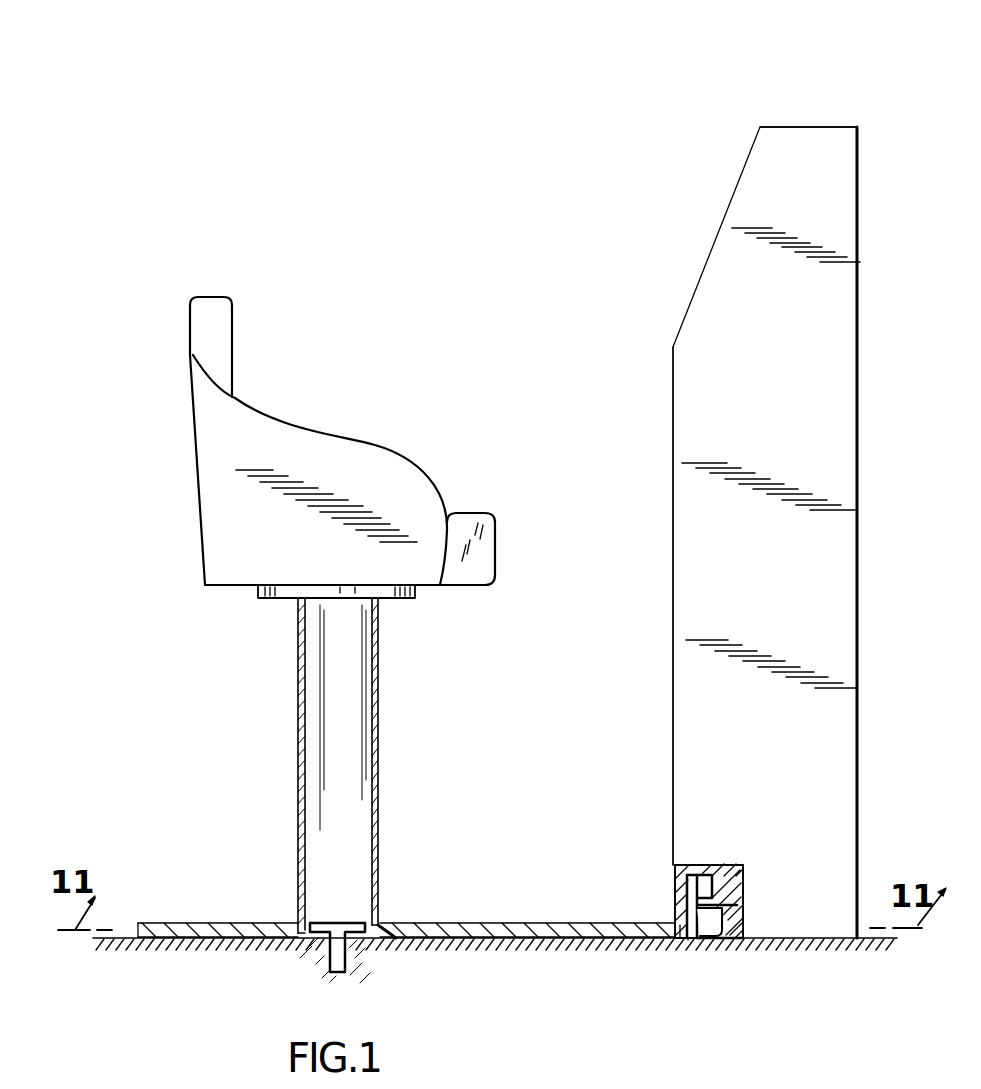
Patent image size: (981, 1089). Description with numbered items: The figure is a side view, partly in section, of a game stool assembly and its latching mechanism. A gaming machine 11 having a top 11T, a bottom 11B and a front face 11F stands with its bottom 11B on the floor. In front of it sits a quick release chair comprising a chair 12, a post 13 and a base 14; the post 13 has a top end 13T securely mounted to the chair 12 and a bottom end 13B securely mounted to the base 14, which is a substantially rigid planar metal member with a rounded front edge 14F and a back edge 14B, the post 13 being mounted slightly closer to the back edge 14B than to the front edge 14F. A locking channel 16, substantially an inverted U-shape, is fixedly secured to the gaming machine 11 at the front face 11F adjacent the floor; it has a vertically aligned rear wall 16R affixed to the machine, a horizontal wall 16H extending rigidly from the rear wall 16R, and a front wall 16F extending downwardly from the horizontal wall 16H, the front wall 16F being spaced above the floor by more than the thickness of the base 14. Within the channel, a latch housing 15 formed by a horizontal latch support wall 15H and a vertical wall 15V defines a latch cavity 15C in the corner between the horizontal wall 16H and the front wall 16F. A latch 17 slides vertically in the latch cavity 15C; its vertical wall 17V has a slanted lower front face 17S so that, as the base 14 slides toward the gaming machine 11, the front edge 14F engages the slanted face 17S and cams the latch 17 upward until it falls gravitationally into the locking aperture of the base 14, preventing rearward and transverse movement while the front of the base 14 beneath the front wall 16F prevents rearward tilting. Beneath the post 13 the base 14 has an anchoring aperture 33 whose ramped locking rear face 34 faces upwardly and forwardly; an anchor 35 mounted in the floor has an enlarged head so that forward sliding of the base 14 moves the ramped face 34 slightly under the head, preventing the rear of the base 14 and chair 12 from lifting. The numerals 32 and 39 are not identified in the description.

The gaming machine 11 is at (752, 544).
The top 11T is at (830, 126).
The front face 11F is at (673, 357).
The bottom 11B is at (837, 939).
The chair 12 is at (384, 448).
The post 13 is at (343, 759).
The top end 13T is at (300, 600).
The bottom end 13B is at (310, 915).
The base 14 is at (423, 934).
The back edge 14B is at (138, 924).
The front edge 14F is at (717, 940).
The latch housing 15 is at (717, 888).
The vertical wall 15V is at (689, 872).
The horizontal latch support wall 15H is at (740, 942).
The latch cavity 15C is at (690, 886).
The locking channel 16 is at (717, 874).
The front wall 16F is at (677, 870).
The horizontal wall 16H is at (706, 868).
The rear wall 16R is at (745, 910).
The latch 17 is at (737, 882).
The vertical wall 17V is at (678, 920).
The slanted lower front face 17S is at (690, 940).
The deck plate flange 32 is at (353, 924).
The anchoring aperture 33 is at (378, 920).
The ramped locking rear face 34 is at (333, 936).
The anchor 35 is at (355, 962).
The bolt stem 39 is at (352, 945).